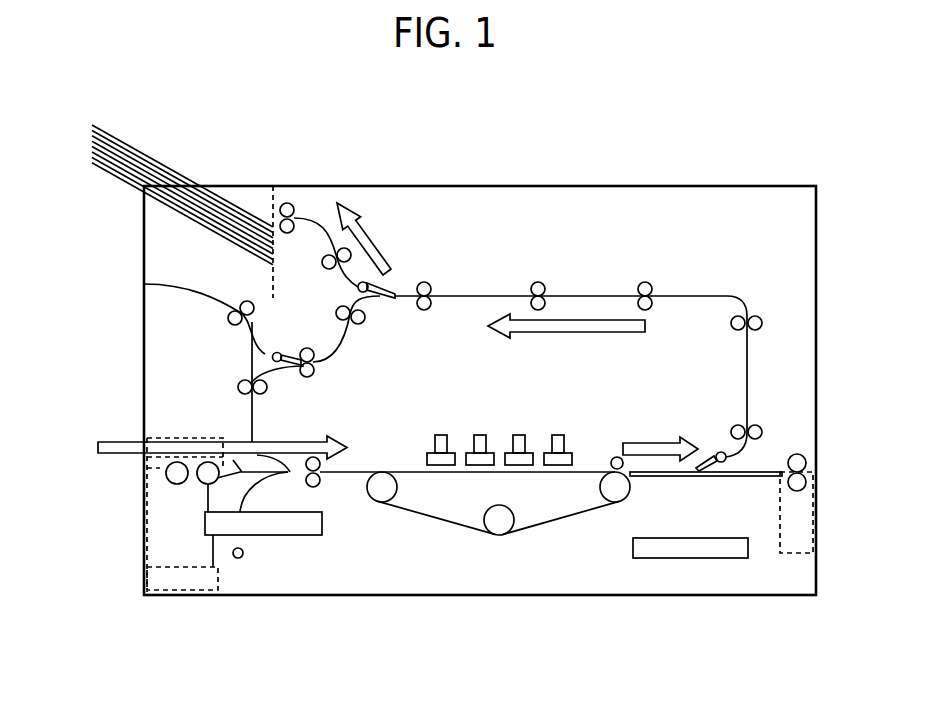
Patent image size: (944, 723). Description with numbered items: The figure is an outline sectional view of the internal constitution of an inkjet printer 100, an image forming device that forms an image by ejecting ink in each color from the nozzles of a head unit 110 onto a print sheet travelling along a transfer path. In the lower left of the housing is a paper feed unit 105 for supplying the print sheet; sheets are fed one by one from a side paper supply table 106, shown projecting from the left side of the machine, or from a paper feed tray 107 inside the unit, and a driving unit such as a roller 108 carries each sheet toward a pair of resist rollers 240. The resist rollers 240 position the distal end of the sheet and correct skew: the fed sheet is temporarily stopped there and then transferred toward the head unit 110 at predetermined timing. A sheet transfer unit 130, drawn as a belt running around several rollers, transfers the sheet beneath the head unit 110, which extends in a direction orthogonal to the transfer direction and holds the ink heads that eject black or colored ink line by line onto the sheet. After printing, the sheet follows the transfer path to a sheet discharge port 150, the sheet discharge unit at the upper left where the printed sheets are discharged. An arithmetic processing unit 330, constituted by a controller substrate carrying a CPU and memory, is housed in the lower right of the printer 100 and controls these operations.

The inkjet printer 100 is at (725, 178).
The paper feed unit 105 is at (265, 547).
The side paper supply table 106 is at (157, 470).
The paper feed tray 107 is at (293, 530).
The roller 108 is at (205, 483).
The head unit 110 is at (572, 405).
The sheet transfer unit 130 is at (480, 540).
The sheet discharge port 150 is at (178, 168).
The resist rollers 240 is at (321, 467).
The arithmetic processing unit 330 is at (667, 538).